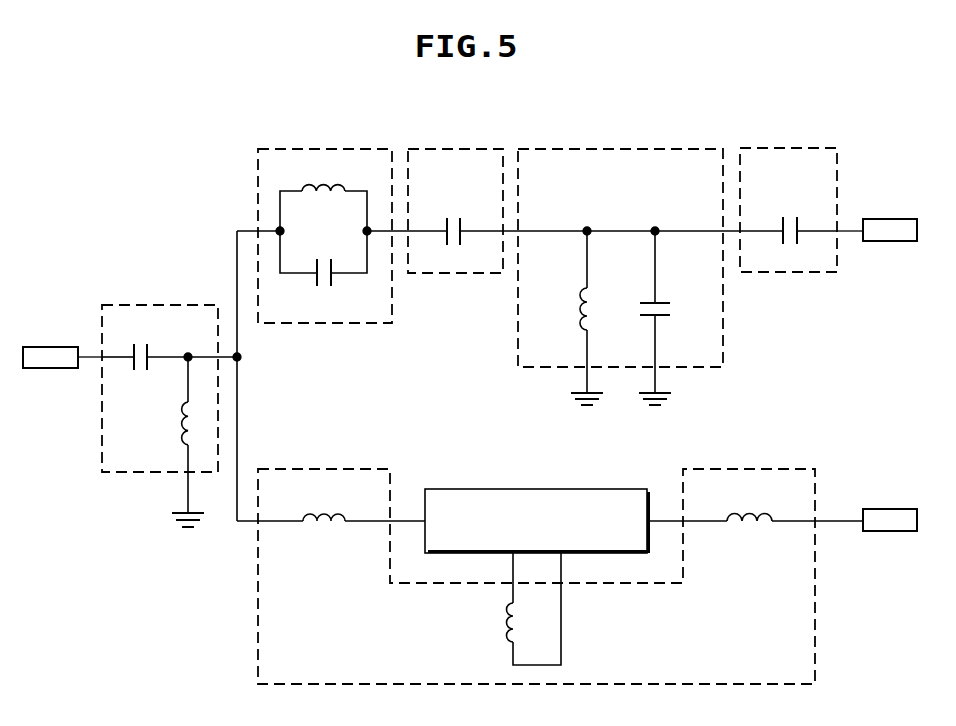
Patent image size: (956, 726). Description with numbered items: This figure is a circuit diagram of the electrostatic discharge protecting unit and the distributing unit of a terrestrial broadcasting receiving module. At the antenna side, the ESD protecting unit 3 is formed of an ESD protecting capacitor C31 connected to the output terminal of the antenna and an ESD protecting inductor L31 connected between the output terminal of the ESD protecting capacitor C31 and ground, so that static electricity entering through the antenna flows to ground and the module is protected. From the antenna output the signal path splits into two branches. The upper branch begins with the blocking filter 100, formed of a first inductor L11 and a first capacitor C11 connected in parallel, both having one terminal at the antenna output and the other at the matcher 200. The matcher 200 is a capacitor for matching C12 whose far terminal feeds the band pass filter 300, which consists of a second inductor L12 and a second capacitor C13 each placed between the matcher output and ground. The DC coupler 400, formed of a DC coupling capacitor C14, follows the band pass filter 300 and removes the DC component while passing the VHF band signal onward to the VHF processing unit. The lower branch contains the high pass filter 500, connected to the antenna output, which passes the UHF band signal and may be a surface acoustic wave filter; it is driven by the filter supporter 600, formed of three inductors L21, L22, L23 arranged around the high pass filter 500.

The ESD protecting unit 3 is at (160, 395).
The blocking filter 100 is at (325, 214).
The matcher 200 is at (455, 189).
The band pass filter 300 is at (620, 255).
The DC coupler 400 is at (788, 188).
The high pass filter 500 is at (532, 489).
The filter supporter 600 is at (536, 554).
The ESD protecting capacitor C31 is at (145, 345).
The ESD protecting inductor L31 is at (171, 442).
The first inductor L11 is at (323, 195).
The first capacitor C11 is at (323, 271).
The capacitor for matching C12 is at (455, 219).
The second inductor L12 is at (569, 318).
The second capacitor C13 is at (676, 318).
The DC coupling capacitor C14 is at (789, 218).
The inductor L21 is at (324, 506).
The inductor L22 is at (749, 504).
The inductor L23 is at (512, 609).